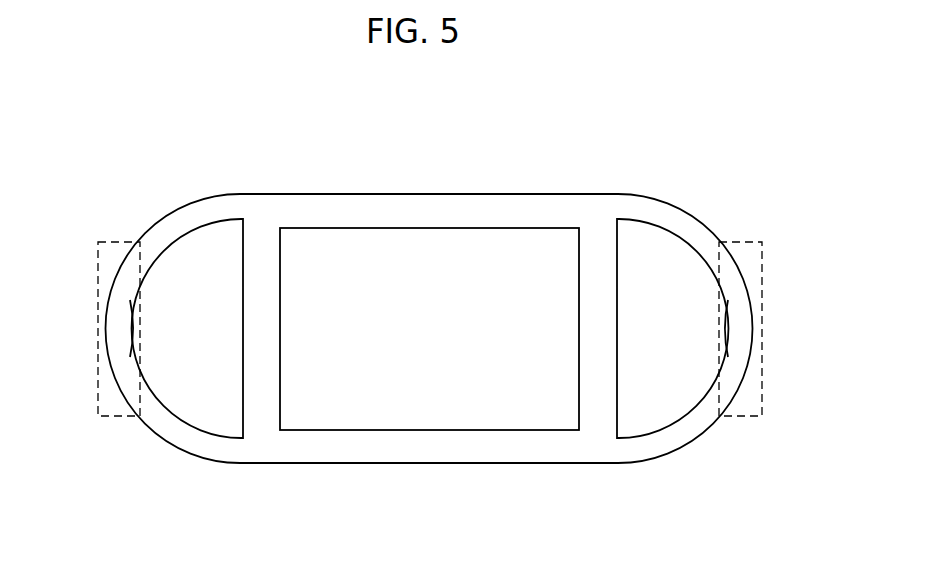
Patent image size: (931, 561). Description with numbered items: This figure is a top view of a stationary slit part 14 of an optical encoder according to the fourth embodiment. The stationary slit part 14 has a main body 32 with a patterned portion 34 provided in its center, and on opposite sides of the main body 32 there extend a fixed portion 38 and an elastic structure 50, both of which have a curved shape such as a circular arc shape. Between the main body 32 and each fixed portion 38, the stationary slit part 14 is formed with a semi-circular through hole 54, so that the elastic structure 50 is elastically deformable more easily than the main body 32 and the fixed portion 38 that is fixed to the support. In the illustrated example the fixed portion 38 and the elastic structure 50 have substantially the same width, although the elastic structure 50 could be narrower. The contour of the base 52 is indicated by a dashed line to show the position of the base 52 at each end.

The stationary slit part 14 is at (296, 148).
The main body 32 is at (499, 193).
The patterned portion 34 is at (462, 431).
The fixed portion 38 is at (115, 335).
The elastic structure 50 is at (207, 215).
The base 52 is at (115, 240).
The semi-circular through hole 54 is at (205, 412).